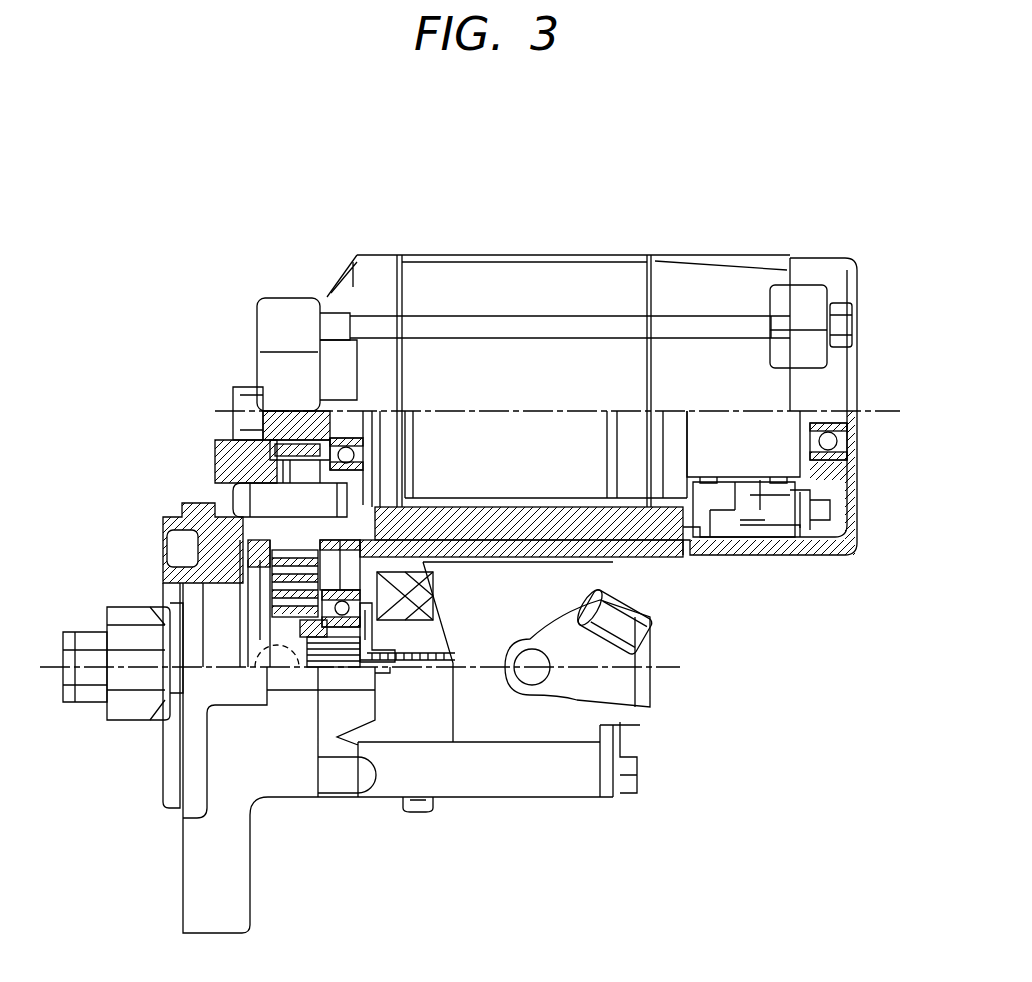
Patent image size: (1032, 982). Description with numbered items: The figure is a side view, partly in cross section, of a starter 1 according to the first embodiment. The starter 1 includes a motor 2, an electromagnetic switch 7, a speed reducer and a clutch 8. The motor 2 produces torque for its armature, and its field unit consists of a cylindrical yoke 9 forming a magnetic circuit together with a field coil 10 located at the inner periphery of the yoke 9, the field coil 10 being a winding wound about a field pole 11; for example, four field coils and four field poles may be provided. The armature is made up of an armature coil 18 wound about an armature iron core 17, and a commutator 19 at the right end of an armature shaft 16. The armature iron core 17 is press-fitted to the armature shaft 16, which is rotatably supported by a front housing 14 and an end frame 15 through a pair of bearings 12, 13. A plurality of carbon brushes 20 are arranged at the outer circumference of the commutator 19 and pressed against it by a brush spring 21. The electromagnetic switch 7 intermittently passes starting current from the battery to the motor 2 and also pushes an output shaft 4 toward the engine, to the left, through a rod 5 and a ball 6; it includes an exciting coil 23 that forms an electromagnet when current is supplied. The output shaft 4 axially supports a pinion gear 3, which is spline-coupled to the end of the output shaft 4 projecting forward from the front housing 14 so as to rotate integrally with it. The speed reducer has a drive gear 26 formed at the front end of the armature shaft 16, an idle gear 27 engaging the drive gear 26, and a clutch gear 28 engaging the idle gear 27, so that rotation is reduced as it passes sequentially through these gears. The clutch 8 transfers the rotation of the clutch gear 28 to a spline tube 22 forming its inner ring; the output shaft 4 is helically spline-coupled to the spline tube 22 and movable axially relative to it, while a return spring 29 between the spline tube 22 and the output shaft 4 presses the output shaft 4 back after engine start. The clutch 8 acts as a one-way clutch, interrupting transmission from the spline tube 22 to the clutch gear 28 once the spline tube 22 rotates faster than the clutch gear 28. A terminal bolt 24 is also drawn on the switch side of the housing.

The starter 1 is at (203, 213).
The motor 2 is at (568, 250).
The pinion gear 3 is at (120, 607).
The output shaft 4 is at (66, 690).
The rod 5 is at (403, 667).
The ball 6 is at (310, 667).
The electromagnetic switch 7 is at (568, 800).
The clutch 8 is at (185, 597).
The yoke 9 is at (645, 672).
The field coil 10 is at (637, 510).
The field pole 11 is at (513, 508).
The bearing 12 is at (352, 445).
The bearing 13 is at (835, 443).
The front housing 14 is at (217, 478).
The end frame 15 is at (840, 265).
The armature shaft 16 is at (286, 415).
The armature iron core 17 is at (458, 432).
The armature coil 18 is at (387, 425).
The commutator 19 is at (724, 425).
The carbon brush 20 is at (718, 540).
The brush spring 21 is at (755, 545).
The spline tube 22 is at (318, 667).
The exciting coil 23 is at (440, 556).
The terminal bolt 24 is at (638, 597).
The drive gear 26 is at (262, 408).
The idle gear 27 is at (258, 432).
The clutch gear 28 is at (287, 608).
The return spring 29 is at (433, 667).